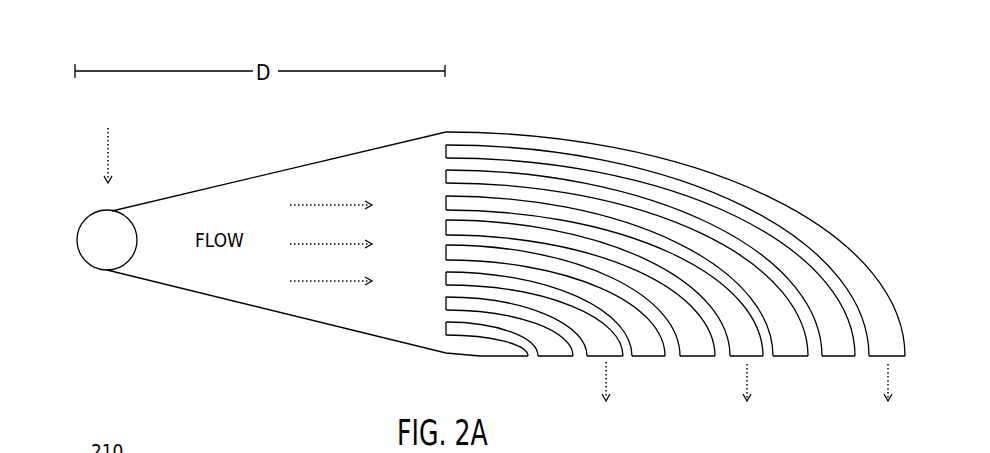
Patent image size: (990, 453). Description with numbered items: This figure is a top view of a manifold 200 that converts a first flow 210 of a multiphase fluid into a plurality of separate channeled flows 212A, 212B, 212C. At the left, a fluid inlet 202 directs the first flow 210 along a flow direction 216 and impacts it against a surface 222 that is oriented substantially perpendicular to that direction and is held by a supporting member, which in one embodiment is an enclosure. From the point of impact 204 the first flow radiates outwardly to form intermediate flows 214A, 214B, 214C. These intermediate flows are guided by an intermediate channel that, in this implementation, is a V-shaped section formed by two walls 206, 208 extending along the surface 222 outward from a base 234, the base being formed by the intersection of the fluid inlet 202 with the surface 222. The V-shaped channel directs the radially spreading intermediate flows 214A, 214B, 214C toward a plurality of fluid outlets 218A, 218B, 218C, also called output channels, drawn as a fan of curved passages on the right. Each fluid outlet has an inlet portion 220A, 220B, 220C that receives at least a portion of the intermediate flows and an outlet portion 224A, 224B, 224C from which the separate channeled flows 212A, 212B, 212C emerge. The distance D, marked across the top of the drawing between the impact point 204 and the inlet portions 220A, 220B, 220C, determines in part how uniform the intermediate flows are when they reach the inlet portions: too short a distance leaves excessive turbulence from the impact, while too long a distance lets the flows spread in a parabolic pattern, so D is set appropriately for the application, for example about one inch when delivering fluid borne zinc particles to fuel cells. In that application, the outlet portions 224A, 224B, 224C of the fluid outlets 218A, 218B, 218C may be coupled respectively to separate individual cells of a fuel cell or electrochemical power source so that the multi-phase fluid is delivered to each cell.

The manifold 200 is at (507, 81).
The fluid inlet 202 is at (92, 268).
The point of impact 204 is at (107, 242).
The wall 206 is at (315, 350).
The wall 208 is at (320, 115).
The first flow 210 is at (107, 115).
The separate channeled flow 212A is at (611, 390).
The separate channeled flow 212B is at (753, 390).
The separate channeled flow 212C is at (893, 390).
The intermediate flow 214A is at (332, 280).
The intermediate flow 214B is at (332, 243).
The intermediate flow 214C is at (332, 203).
The flow direction 216 is at (107, 148).
The fluid outlet 218A is at (607, 351).
The fluid outlet 218B is at (745, 351).
The fluid outlet 218C is at (887, 351).
The inlet portion 220A is at (450, 293).
The inlet portion 220B is at (450, 217).
The inlet portion 220C is at (447, 133).
The surface 222 is at (160, 208).
The outlet portion 224A is at (612, 358).
The outlet portion 224B is at (752, 358).
The outlet portion 224C is at (895, 357).
The base 234 is at (140, 327).